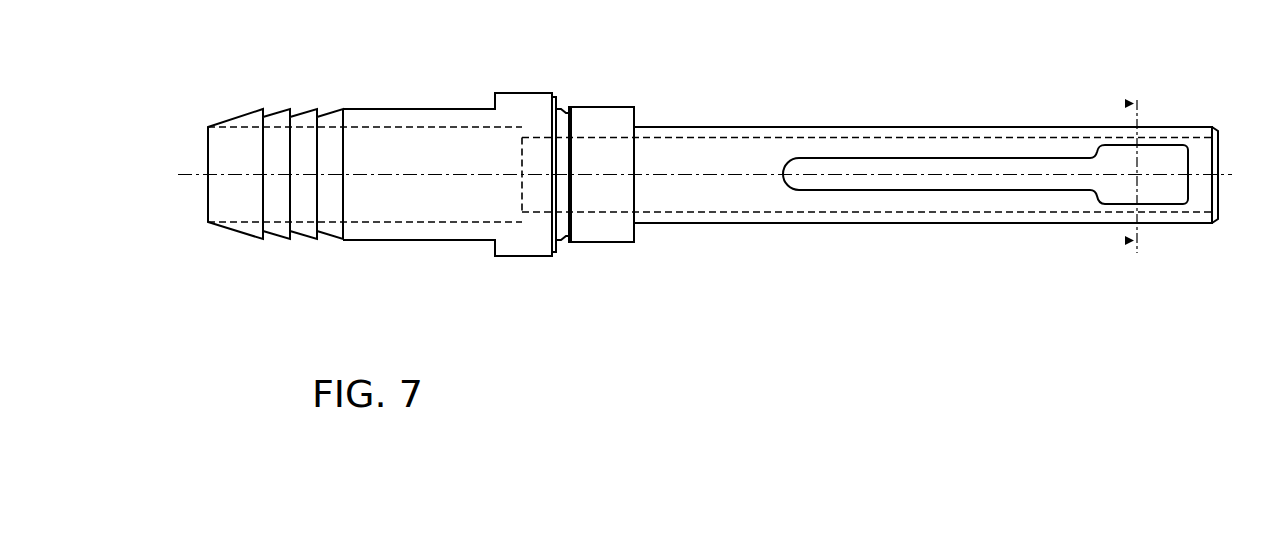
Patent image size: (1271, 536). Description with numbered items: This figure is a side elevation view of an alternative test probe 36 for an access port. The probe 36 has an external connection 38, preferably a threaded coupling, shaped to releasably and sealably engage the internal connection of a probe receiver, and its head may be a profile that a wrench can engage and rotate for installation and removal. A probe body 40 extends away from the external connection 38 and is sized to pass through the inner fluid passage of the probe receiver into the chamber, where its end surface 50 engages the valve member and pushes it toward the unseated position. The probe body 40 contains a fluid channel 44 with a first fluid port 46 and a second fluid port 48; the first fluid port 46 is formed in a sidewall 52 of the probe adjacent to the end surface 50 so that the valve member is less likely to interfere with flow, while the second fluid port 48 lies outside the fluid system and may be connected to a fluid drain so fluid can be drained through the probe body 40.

The probe 36 is at (898, 276).
The external connection 38 is at (620, 232).
The probe body 40 is at (1093, 213).
The fluid channel 44 is at (727, 188).
The first fluid port 46 is at (1172, 188).
The second fluid port 48 is at (225, 203).
The end surface 50 is at (1213, 175).
The sidewall 52 is at (949, 147).